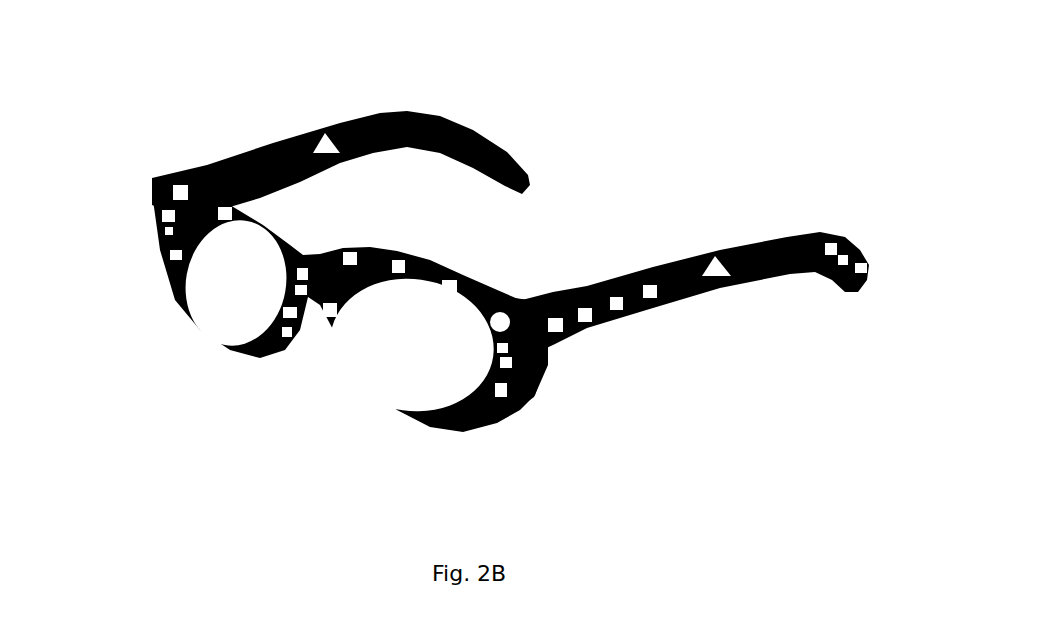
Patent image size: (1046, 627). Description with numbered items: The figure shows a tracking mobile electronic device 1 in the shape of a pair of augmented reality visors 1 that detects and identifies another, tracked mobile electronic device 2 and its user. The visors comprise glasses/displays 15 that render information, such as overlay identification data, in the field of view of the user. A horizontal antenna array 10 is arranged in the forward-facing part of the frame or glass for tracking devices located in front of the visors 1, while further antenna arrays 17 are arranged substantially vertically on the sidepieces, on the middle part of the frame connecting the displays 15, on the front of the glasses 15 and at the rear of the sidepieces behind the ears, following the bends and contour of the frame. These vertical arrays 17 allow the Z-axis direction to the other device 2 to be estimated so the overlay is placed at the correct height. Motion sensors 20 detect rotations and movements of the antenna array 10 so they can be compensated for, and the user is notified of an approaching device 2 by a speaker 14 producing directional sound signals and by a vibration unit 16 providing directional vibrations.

The tracking mobile electronic device 1 is at (496, 314).
The tracked mobile electronic device 2 is at (496, 285).
The antenna array 10 is at (412, 260).
The speaker 14 is at (609, 189).
The display 15 is at (423, 350).
The vibration unit 16 is at (323, 133).
The further antenna arrays 17 is at (843, 243).
The motion sensors 20 is at (532, 373).